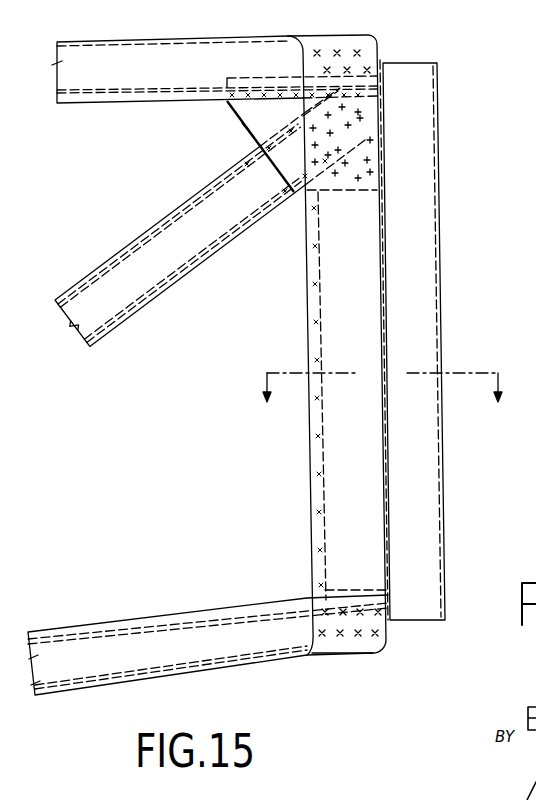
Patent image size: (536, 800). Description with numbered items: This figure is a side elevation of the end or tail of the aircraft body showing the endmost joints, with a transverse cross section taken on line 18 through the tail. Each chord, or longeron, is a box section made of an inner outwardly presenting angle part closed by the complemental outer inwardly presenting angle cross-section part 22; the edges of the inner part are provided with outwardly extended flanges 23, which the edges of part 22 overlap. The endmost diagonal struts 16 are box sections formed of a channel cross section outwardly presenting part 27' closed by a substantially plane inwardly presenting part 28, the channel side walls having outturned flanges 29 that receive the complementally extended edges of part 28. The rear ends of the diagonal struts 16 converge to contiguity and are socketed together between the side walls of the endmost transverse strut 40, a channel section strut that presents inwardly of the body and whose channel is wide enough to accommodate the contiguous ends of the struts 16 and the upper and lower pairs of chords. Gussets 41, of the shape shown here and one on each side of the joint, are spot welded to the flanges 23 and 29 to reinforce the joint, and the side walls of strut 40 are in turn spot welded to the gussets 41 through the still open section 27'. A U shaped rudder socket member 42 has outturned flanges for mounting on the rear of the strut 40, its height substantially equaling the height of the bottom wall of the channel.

The diagonal strut 16 is at (210, 225).
The section line 18- 18 is at (379, 410).
The outer inwardly presenting angle cross-section part 22 is at (201, 38).
The outwardly extended flange 23 is at (229, 104).
The channel cross section outwardly presenting part 27' is at (192, 270).
The inwardly presenting part 28 is at (147, 242).
The outturned flange 29 is at (253, 146).
The endmost transverse strut 40 is at (342, 332).
The gusset 41 is at (242, 123).
The rudder socket member 42 is at (432, 222).